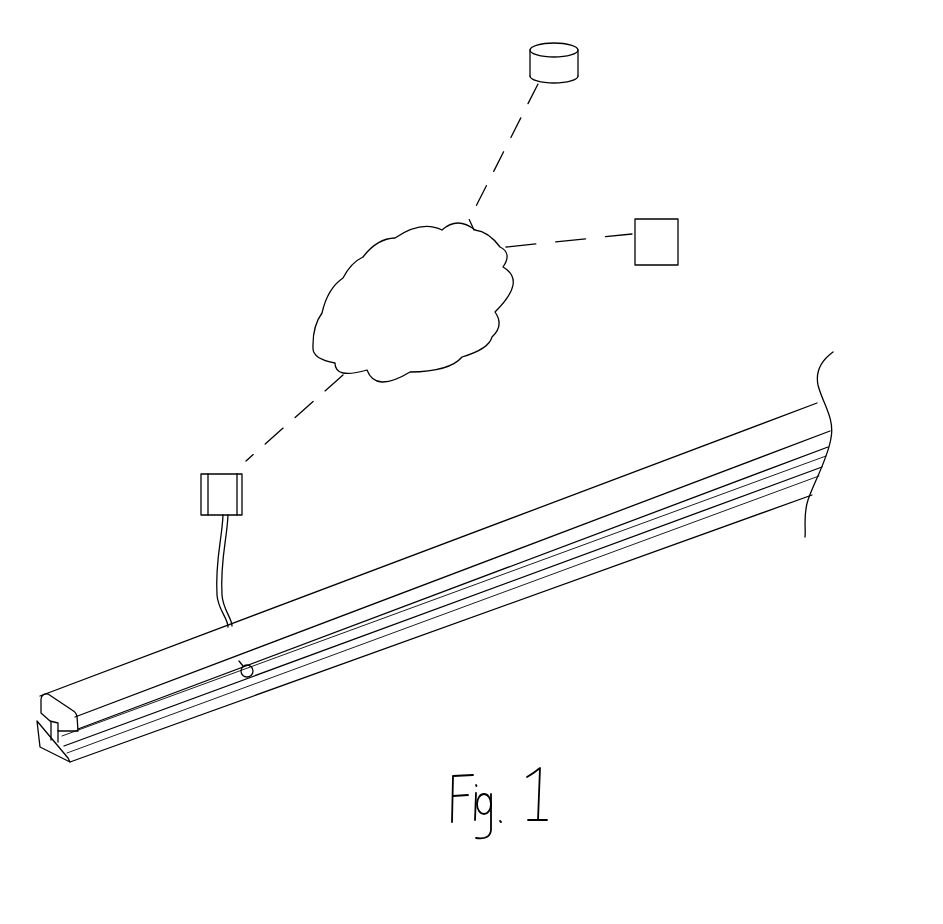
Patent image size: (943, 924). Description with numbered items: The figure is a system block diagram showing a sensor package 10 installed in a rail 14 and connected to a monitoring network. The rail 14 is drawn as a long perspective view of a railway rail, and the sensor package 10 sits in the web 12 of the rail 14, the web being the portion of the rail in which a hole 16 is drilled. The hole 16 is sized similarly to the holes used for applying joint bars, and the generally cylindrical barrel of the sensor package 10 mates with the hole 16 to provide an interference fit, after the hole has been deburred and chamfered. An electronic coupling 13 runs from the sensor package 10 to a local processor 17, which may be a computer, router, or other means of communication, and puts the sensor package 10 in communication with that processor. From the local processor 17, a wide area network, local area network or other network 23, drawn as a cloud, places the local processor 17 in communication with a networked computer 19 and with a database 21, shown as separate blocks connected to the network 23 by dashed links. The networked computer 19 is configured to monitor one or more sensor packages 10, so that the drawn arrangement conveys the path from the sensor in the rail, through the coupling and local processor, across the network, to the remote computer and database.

The sensor package 10 is at (435, 593).
The web 12 is at (113, 722).
The electronic coupling 13 is at (226, 578).
The rail 14 is at (135, 667).
The hole 16 is at (240, 681).
The local processor 17 is at (242, 512).
The networked computer 19 is at (656, 272).
The database 21 is at (566, 44).
The network 23 is at (421, 306).